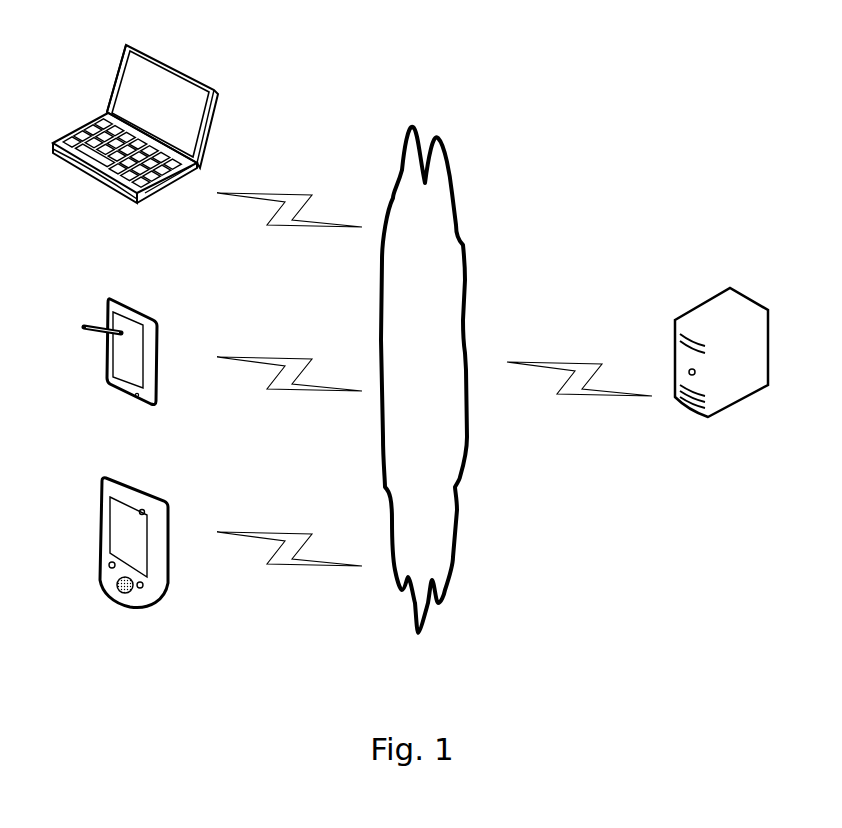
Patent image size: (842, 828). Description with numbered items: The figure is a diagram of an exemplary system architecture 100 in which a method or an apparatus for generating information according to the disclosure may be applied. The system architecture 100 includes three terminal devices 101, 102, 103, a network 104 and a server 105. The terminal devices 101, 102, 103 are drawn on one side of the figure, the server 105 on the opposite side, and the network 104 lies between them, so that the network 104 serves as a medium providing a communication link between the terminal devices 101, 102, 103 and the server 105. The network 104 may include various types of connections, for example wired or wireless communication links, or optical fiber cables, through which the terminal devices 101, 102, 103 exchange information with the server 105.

The system architecture 100 is at (677, 34).
The terminal device 101 is at (134, 560).
The terminal device 102 is at (120, 370).
The terminal device 103 is at (135, 143).
The network 104 is at (424, 380).
The server 105 is at (721, 375).